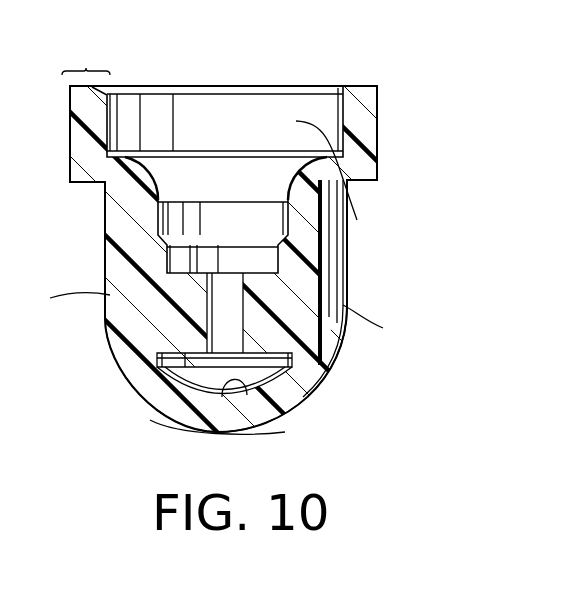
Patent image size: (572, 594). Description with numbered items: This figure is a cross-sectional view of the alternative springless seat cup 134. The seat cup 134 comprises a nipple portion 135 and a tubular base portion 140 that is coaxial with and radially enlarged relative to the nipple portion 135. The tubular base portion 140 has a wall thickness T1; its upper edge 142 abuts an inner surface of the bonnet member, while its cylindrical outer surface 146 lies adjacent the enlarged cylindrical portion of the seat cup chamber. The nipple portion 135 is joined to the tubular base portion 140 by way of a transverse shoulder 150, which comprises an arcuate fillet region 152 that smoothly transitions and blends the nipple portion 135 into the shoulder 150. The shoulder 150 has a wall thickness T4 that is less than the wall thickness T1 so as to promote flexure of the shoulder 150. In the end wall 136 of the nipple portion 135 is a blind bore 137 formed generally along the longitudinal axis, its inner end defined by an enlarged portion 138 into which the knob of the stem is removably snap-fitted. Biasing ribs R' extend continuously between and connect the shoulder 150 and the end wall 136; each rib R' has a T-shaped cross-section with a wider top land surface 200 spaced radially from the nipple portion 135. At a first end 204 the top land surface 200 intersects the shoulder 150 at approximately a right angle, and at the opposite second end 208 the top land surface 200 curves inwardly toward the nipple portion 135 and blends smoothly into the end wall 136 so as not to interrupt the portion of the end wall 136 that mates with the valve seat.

The springless seat cup 134 is at (238, 76).
The nipple portion 135 is at (316, 338).
The end wall 136 is at (193, 439).
The blind bore 137 is at (232, 295).
The enlarged portion 138 is at (222, 389).
The tubular base portion 140 is at (201, 98).
The upper edge 142 is at (283, 87).
The cylindrical outer surface 146 is at (379, 123).
The transverse shoulder 150 is at (90, 183).
The arcuate fillet region 152 is at (323, 237).
The top land surface 200 is at (356, 263).
The first end 204 is at (93, 215).
The second end 208 is at (114, 380).
The wall thickness T1 is at (86, 61).
The wall thickness T4 is at (312, 164).
The biasing ribs R' is at (211, 316).